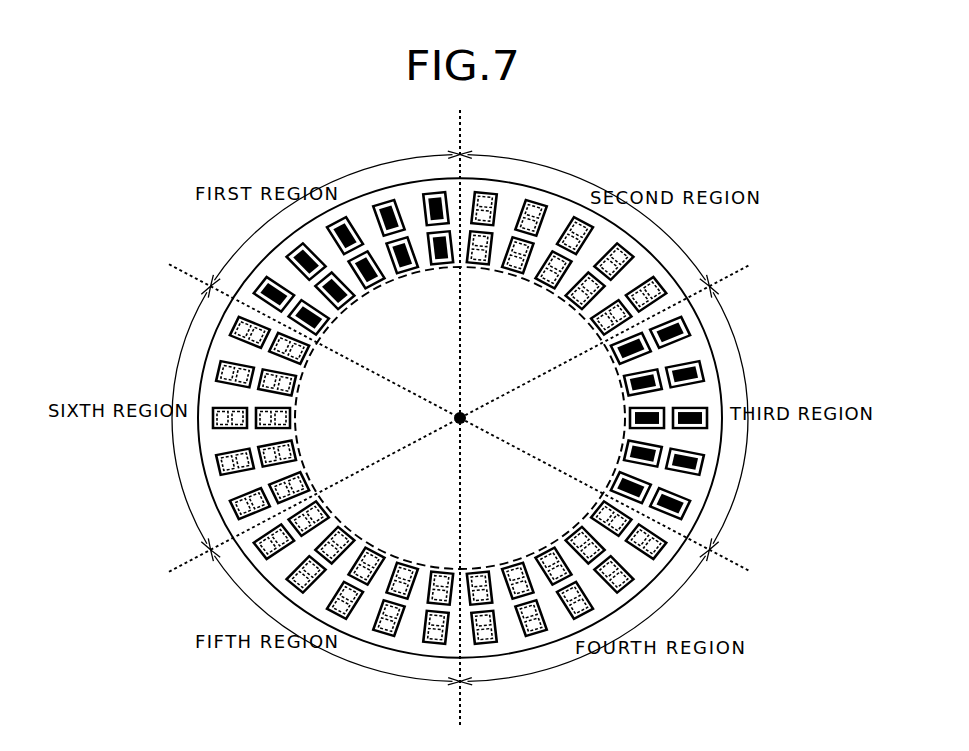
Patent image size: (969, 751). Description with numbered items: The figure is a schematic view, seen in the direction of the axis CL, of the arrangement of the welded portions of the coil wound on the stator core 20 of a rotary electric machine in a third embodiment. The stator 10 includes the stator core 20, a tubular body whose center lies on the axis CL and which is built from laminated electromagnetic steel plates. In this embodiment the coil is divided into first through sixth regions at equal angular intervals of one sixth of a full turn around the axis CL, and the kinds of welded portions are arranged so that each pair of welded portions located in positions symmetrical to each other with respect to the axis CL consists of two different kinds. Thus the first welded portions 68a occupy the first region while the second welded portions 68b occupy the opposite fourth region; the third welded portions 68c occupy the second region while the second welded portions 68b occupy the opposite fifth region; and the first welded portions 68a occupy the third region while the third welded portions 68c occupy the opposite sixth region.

The stator 10 is at (752, 297).
The stator core 20 is at (712, 352).
The axis CL is at (466, 418).
The first welded portion 68a is at (377, 283).
The second welded portion 68b is at (372, 549).
The third welded portion 68c is at (541, 283).